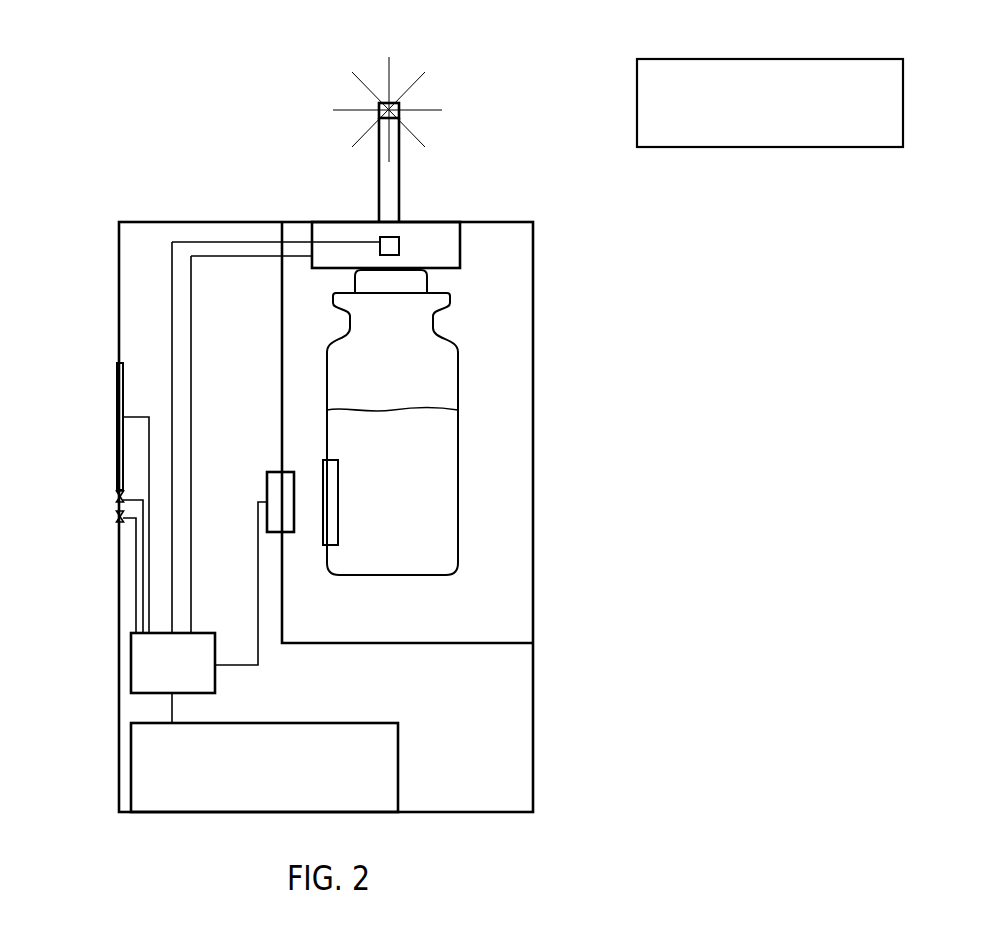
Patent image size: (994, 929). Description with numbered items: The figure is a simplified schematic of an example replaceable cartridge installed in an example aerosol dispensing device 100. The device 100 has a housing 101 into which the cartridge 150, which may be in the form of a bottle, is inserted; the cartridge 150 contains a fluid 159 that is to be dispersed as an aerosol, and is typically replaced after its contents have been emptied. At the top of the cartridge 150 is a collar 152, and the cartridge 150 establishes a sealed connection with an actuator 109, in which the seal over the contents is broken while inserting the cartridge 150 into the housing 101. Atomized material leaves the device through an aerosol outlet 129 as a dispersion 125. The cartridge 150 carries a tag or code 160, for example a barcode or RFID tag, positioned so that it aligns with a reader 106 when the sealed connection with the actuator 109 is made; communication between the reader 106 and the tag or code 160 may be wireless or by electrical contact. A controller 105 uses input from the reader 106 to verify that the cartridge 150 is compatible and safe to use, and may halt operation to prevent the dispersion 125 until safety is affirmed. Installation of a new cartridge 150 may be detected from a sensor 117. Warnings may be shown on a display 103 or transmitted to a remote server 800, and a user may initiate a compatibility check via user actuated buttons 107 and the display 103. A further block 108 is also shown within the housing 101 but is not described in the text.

The aerosol dispensing device 100 is at (184, 120).
The housing 101 is at (119, 268).
The display 103 is at (117, 410).
The controller 105 is at (215, 680).
The reader 106 is at (267, 481).
The user actuated buttons 107 is at (117, 514).
The power source 108 is at (398, 765).
The actuator 109 is at (460, 240).
The sensor 117 is at (383, 237).
The dispersion 125 is at (410, 90).
The aerosol outlet 129 is at (399, 156).
The cartridge 150 is at (458, 428).
The collar 152 is at (428, 284).
The fluid 159 is at (371, 464).
The tag or code 160 is at (338, 525).
The remote server 800 is at (693, 59).